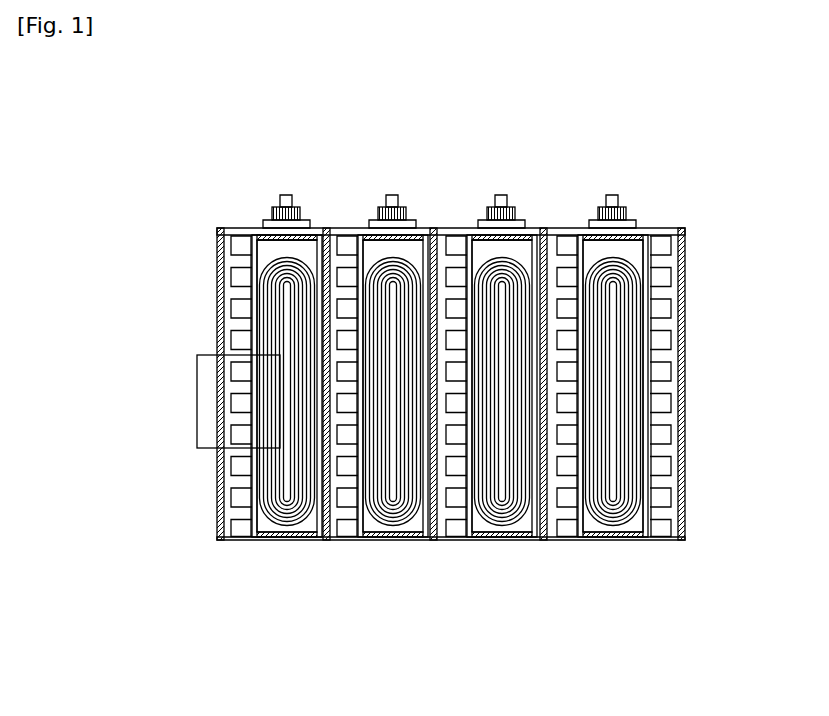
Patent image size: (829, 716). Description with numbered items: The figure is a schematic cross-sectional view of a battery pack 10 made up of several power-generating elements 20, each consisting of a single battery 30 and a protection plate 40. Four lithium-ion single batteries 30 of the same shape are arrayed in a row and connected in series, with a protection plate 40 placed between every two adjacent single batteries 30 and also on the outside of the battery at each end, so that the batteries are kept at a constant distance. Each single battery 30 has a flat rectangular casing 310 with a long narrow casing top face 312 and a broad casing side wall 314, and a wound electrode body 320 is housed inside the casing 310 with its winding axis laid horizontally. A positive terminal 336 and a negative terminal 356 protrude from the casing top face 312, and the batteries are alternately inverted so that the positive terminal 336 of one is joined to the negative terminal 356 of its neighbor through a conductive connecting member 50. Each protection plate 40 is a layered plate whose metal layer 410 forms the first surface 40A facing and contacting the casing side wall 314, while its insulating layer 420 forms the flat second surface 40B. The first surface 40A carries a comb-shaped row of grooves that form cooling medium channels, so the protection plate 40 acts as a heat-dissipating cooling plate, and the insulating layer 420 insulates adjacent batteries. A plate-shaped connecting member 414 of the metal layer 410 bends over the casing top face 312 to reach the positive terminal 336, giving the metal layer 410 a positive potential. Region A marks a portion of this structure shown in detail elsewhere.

The battery pack 10 is at (710, 145).
The power-generating element 20 is at (441, 395).
The single battery 30 is at (300, 545).
The protection plate 40 is at (222, 545).
The first surface 40A is at (223, 541).
The second surface 40B is at (326, 228).
The conductive connecting member 50 is at (310, 222).
The casing 310 is at (254, 236).
The casing top face 312 is at (257, 236).
The casing side wall 314 is at (346, 244).
The wound electrode body 320 is at (276, 537).
The positive terminal 336 is at (283, 195).
The negative terminal 356 is at (394, 195).
The metal layer 410 is at (240, 283).
The connecting member 414 is at (240, 230).
The insulating layer 420 is at (250, 322).
The region A is at (197, 378).